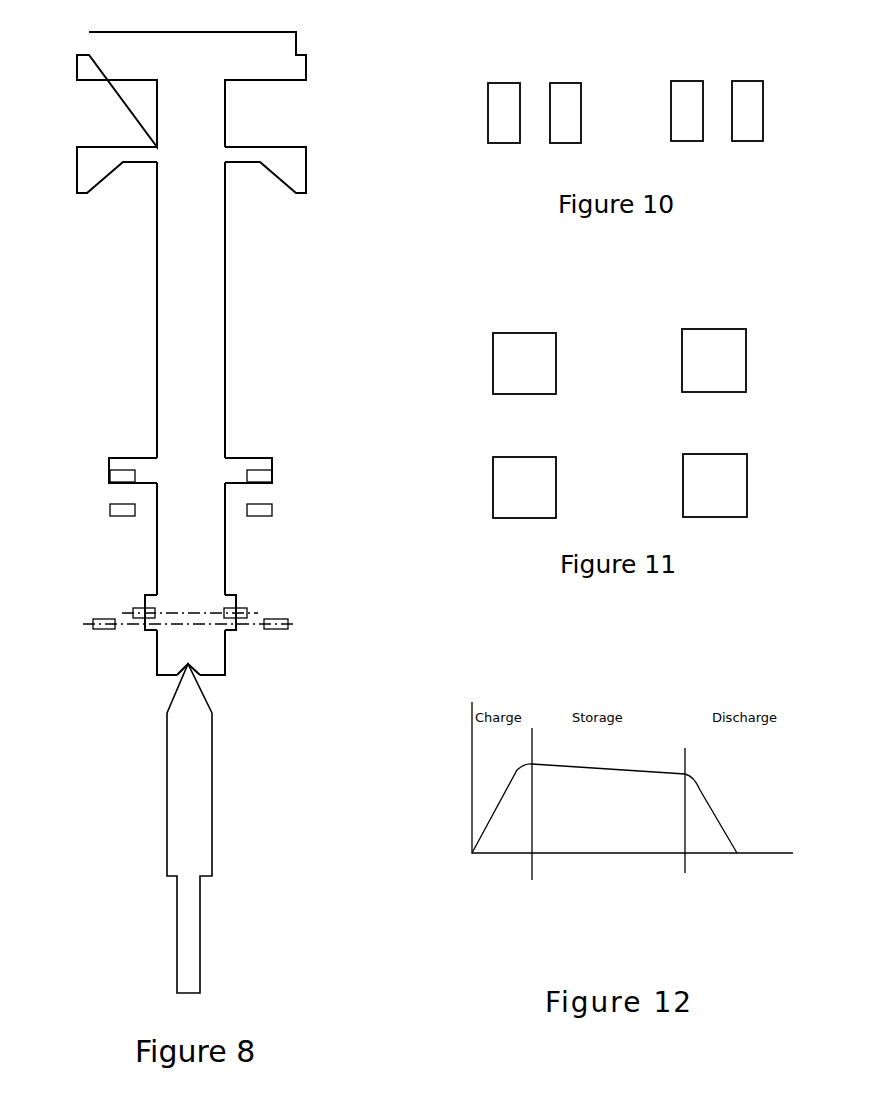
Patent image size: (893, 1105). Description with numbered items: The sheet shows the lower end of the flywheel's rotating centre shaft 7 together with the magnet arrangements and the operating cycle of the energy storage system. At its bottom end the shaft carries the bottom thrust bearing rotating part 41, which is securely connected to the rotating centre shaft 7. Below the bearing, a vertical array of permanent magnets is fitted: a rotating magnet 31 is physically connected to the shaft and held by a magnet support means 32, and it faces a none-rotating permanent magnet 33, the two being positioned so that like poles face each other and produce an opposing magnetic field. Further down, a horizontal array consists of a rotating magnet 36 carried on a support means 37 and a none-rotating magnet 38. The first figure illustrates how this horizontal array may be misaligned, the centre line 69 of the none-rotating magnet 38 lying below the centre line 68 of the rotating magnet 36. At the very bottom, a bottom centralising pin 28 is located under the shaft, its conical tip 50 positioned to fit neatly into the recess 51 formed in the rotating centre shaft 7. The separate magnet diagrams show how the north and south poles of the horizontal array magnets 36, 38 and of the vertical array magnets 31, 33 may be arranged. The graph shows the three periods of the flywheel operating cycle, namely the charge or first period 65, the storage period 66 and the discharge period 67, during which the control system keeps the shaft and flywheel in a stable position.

In FIG. 8, the rotating centre shaft 7 is at (183, 402).
In FIG. 8, the bottom thrust bearing rotating part 41 is at (298, 183).
In FIG. 8, the magnet support means 32 is at (245, 465).
In FIG. 8, the rotating magnet 31 is at (265, 475).
In FIG. 11, the rotating magnet 31 is at (556, 363).
In FIG. 8, the none-rotating permanent magnet 33 is at (258, 510).
In FIG. 11, the none-rotating permanent magnet 33 is at (548, 480).
In FIG. 8, the support means 37 is at (234, 602).
In FIG. 8, the rotating magnet 36 is at (247, 608).
In FIG. 10, the rotating magnet 36 is at (578, 128).
In FIG. 8, the none-rotating magnet 38 is at (279, 625).
In FIG. 10, the none-rotating magnet 38 is at (513, 137).
In FIG. 8, the centre line 68 is at (164, 611).
In FIG. 8, the centre line 69 is at (131, 623).
In FIG. 8, the recess 51 is at (185, 668).
In FIG. 8, the conical tip 50 is at (203, 695).
In FIG. 8, the bottom centralising pin 28 is at (190, 800).
In FIG. 12, the first period 65 is at (502, 810).
In FIG. 12, the second period 66 is at (608, 820).
In FIG. 12, the third period 67 is at (711, 831).